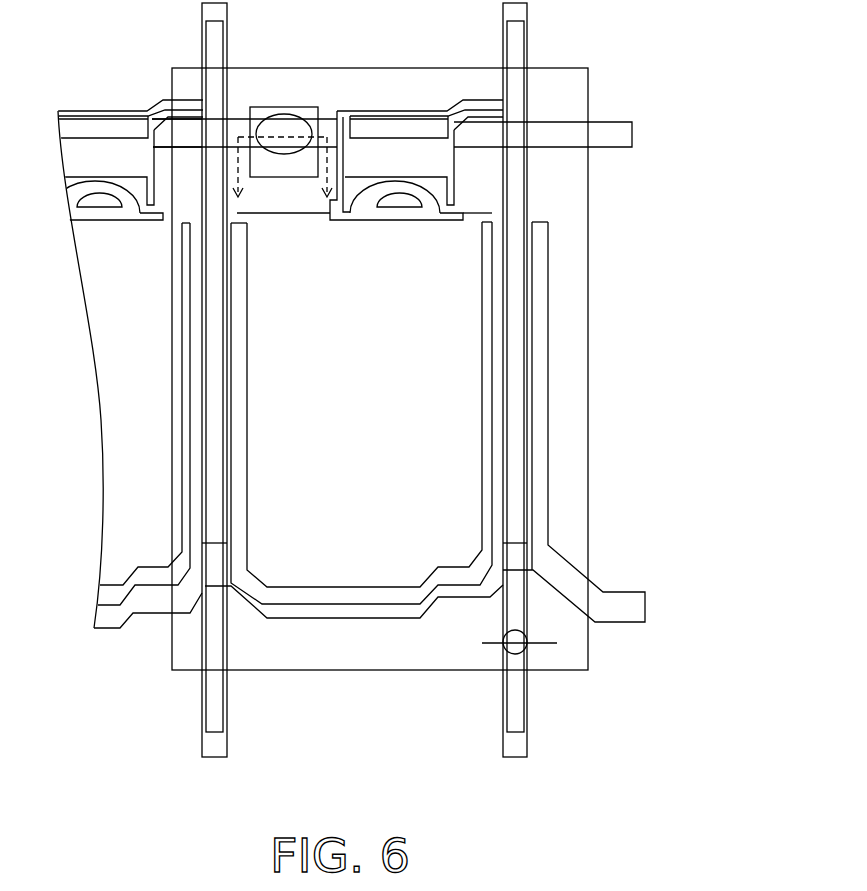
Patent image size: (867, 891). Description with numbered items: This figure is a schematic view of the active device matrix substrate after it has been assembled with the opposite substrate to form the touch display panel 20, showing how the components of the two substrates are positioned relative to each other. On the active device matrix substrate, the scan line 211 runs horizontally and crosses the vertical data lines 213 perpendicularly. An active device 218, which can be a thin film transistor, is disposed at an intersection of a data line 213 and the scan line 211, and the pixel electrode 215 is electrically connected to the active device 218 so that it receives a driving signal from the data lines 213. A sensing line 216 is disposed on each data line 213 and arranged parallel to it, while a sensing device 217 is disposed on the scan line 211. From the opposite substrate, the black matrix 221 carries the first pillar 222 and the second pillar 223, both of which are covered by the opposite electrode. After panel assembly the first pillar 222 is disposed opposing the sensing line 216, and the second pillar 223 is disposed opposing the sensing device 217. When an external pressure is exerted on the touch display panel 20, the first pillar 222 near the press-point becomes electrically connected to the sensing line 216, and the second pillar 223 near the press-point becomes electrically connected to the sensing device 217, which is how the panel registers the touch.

The touch display panel 20 is at (714, 767).
The scan line 211 is at (626, 137).
The data line 213 is at (518, 83).
The pixel electrode 215 is at (452, 363).
The sensing line 216 is at (529, 182).
The sensing device 217 is at (273, 107).
The active device 218 is at (393, 147).
The black matrix 221 is at (588, 297).
The first pillar 222 is at (535, 652).
The second pillar 223 is at (298, 116).